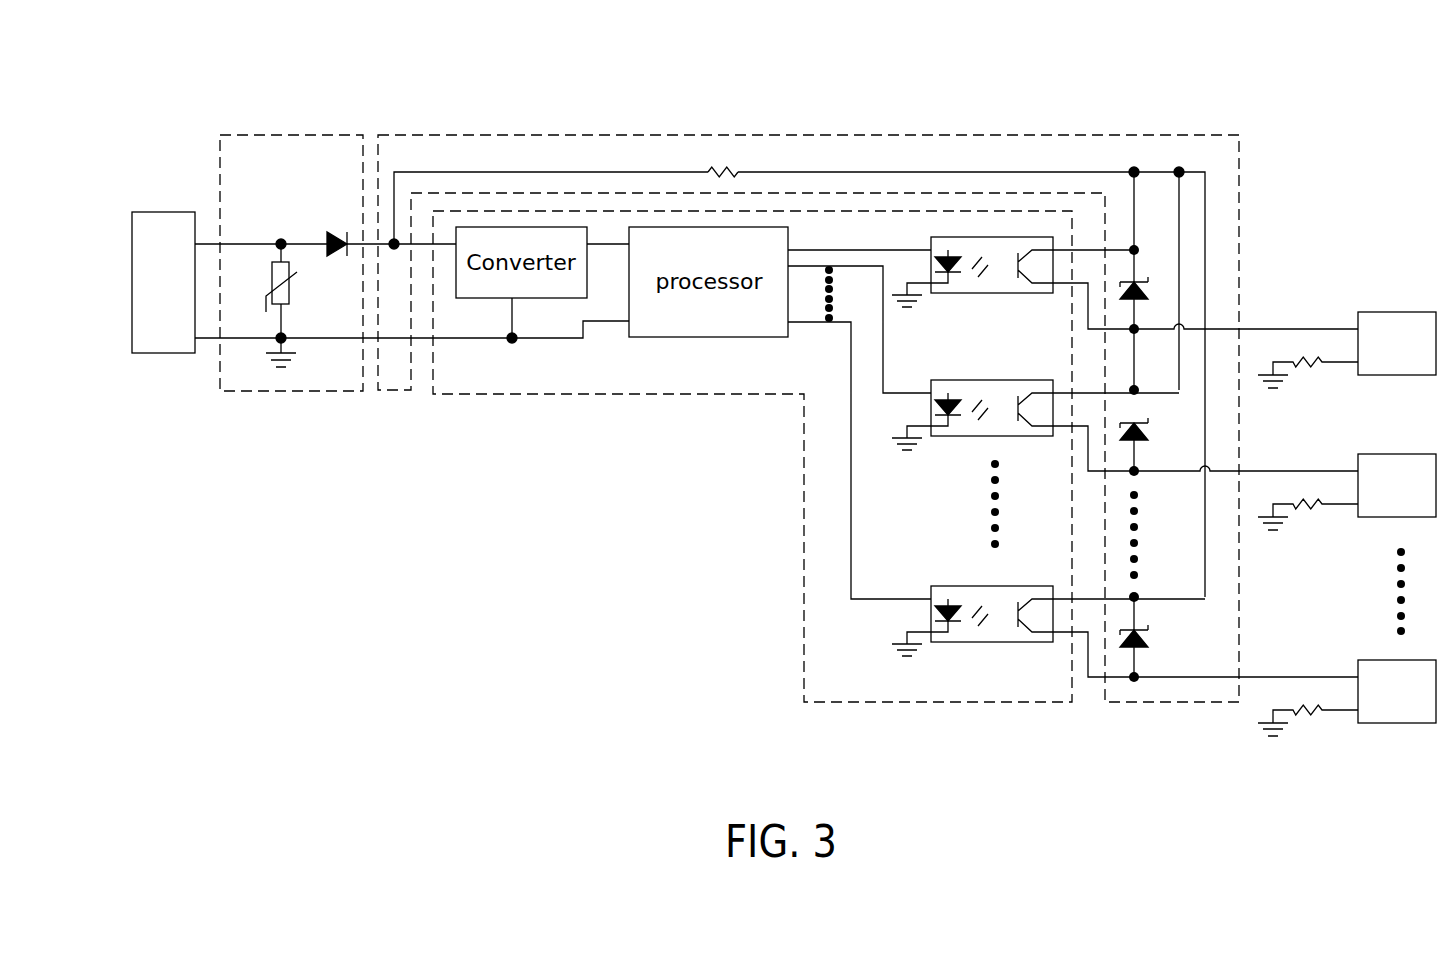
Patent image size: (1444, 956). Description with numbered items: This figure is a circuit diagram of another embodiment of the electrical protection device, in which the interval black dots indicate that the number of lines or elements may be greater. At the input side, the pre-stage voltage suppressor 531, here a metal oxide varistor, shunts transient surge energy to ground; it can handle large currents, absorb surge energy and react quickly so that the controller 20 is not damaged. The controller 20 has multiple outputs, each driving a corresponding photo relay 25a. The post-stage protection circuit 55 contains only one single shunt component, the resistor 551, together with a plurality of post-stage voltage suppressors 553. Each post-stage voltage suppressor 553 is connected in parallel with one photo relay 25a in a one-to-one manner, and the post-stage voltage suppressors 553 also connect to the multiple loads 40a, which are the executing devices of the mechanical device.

The controller 20 is at (804, 530).
The photo relay 25a is at (968, 293).
The load 40a is at (1400, 312).
The post-stage protection circuit 55 is at (1066, 135).
The pre-stage voltage suppressor 531 is at (290, 292).
The shunt component 551 is at (722, 163).
The post-stage voltage suppressor 553 is at (1148, 283).